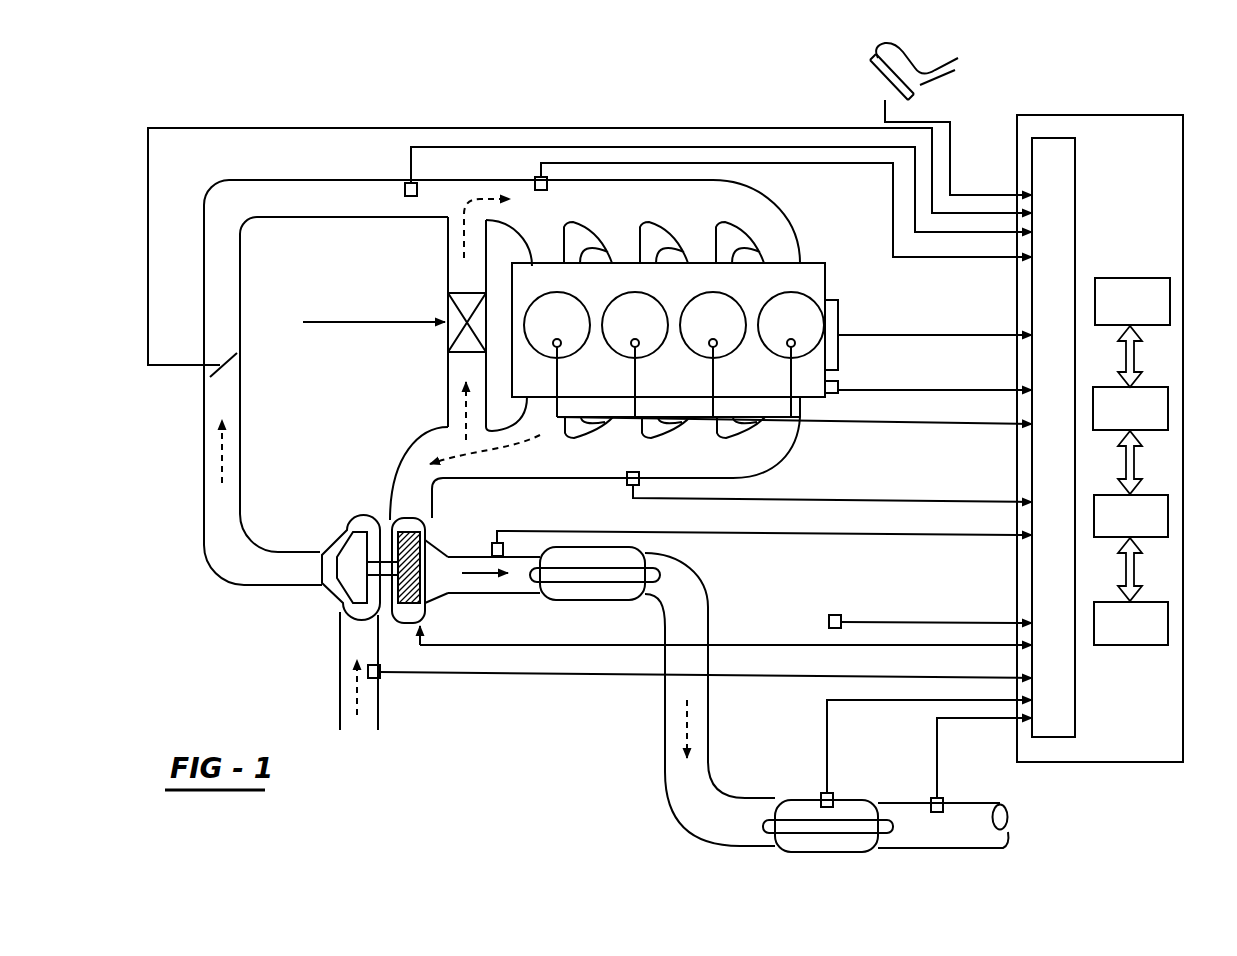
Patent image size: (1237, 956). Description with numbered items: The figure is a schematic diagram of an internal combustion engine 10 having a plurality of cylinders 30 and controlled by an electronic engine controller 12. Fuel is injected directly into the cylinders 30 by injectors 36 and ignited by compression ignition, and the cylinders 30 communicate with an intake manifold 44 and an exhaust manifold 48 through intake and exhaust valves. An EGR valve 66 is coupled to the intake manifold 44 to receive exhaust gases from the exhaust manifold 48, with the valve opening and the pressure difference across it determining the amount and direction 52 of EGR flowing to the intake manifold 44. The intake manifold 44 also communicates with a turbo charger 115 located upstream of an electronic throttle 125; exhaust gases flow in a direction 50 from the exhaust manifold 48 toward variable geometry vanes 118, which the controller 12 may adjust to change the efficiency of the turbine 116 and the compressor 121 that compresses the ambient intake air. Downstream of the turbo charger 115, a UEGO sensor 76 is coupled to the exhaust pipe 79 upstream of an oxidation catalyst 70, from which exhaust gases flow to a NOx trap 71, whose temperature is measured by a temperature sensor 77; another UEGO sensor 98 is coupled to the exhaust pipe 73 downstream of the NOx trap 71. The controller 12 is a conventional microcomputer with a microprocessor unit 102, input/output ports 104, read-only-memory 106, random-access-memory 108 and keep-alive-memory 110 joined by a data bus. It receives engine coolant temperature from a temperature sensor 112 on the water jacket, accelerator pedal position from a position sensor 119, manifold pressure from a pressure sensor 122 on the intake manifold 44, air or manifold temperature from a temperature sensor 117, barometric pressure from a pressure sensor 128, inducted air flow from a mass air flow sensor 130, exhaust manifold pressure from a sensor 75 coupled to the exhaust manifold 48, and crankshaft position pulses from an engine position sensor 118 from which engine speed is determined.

The internal combustion engine 10 is at (830, 270).
The electronic engine controller 12 is at (1108, 114).
The cylinders 30 is at (788, 292).
The injectors 36 is at (633, 346).
The intake manifold 44 is at (792, 228).
The exhaust manifold 48 is at (780, 455).
The direction of exhaust gas flow 50 is at (424, 430).
The direction of EGR flow 52 is at (446, 422).
The EGR valve 66 is at (446, 300).
The oxidation catalyst 70 is at (580, 601).
The NOx trap 71 is at (798, 795).
The exhaust pipe 73 is at (988, 802).
The exhaust manifold pressure sensor 75 is at (628, 488).
The UEGO sensor 76 is at (505, 549).
The temperature sensor 77 is at (885, 768).
The exhaust pipe 79 is at (517, 598).
The UEGO sensor 98 is at (948, 796).
The microprocessor unit 102 is at (1168, 392).
The input/output ports 104 is at (1078, 185).
The read-only-memory 106 is at (1133, 278).
The random-access-memory 108 is at (1168, 517).
The keep-alive-memory 110 is at (1170, 625).
The temperature sensor 112 is at (852, 382).
The turbo charger 115 is at (345, 512).
The turbine 116 is at (433, 597).
The temperature sensor 117 is at (404, 188).
The variable geometry vanes / engine position sensor 118 is at (428, 548).
The position sensor 119 is at (870, 67).
The compressor 121 is at (346, 615).
The pressure sensor 122 is at (534, 182).
The electronic throttle 125 is at (198, 380).
The pressure sensor 128 is at (840, 612).
The mass air flow sensor 130 is at (382, 682).